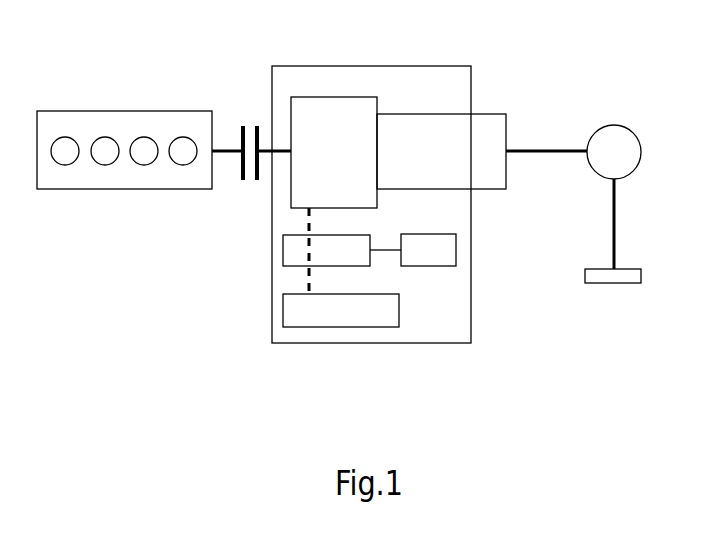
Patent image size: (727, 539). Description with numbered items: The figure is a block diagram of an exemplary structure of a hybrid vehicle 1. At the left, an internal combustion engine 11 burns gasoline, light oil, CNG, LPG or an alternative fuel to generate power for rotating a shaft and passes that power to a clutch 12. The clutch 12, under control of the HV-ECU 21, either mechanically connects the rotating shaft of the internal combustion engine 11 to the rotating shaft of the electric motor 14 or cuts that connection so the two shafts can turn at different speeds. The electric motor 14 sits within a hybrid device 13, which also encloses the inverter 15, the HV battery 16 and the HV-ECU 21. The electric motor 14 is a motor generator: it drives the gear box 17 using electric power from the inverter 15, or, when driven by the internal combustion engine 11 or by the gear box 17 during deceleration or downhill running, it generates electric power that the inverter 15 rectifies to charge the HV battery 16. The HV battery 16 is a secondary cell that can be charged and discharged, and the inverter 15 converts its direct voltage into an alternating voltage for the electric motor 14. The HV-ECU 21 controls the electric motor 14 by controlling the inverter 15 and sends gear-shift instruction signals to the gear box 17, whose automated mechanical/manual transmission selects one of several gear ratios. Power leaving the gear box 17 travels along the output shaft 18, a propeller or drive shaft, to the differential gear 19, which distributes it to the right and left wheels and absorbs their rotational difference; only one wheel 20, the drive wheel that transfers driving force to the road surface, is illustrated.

The hybrid vehicle 1 is at (219, 212).
The internal combustion engine 11 is at (133, 111).
The clutch 12 is at (241, 131).
The hybrid device 13 is at (372, 66).
The electric motor 14 is at (312, 97).
The inverter 15 is at (326, 235).
The HV battery 16 is at (335, 294).
The gear box 17 is at (507, 130).
The output shaft 18 is at (558, 148).
The differential gear 19 is at (612, 125).
The wheel 20 is at (660, 283).
The HV-ECU 21 is at (425, 234).